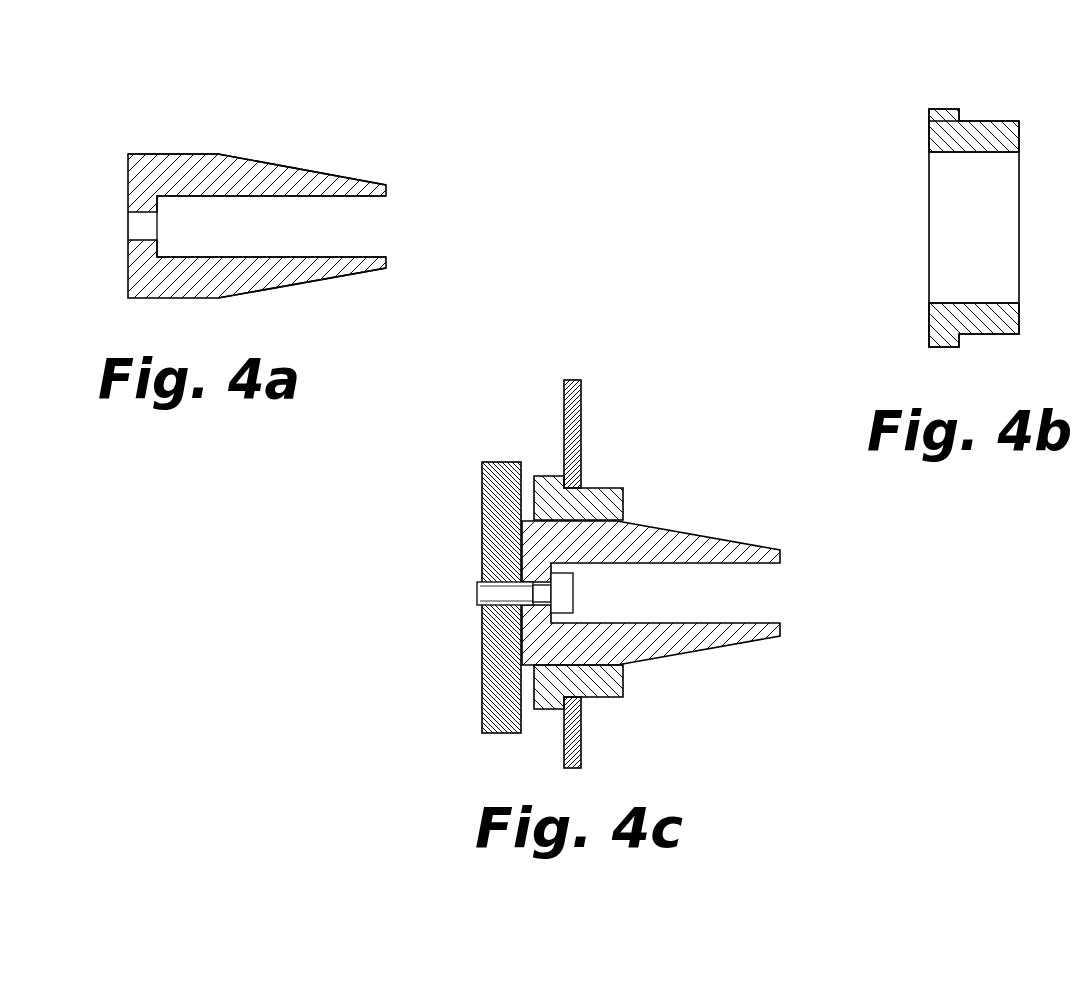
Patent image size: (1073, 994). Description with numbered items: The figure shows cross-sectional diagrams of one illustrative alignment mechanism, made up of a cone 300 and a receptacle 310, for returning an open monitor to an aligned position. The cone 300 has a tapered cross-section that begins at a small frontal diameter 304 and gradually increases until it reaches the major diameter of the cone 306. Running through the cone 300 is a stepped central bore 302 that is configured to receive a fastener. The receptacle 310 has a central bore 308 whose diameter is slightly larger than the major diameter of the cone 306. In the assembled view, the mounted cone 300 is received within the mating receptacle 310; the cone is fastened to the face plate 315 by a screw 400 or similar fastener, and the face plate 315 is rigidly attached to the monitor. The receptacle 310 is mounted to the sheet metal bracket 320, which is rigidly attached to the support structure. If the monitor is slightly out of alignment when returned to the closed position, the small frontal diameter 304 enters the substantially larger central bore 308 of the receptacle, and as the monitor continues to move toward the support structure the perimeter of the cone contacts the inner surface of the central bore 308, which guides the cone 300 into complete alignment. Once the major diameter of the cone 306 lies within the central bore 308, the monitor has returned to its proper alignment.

In FIG. 4a, the cone 300 is at (90, 152).
In FIG. 4c, the cone 300 is at (730, 643).
In FIG. 4a, the stepped central bore 302 is at (377, 215).
In FIG. 4a, the small frontal diameter 304 is at (377, 268).
In FIG. 4a, the major diameter of the cone 306 is at (157, 153).
In FIG. 4b, the central bore 308 is at (938, 189).
In FIG. 4b, the receptacle 310 is at (969, 121).
In FIG. 4c, the receptacle 310 is at (623, 498).
In FIG. 4c, the face plate 315 is at (482, 490).
In FIG. 4c, the sheet metal bracket 320 is at (564, 403).
In FIG. 4c, the screw 400 is at (472, 593).